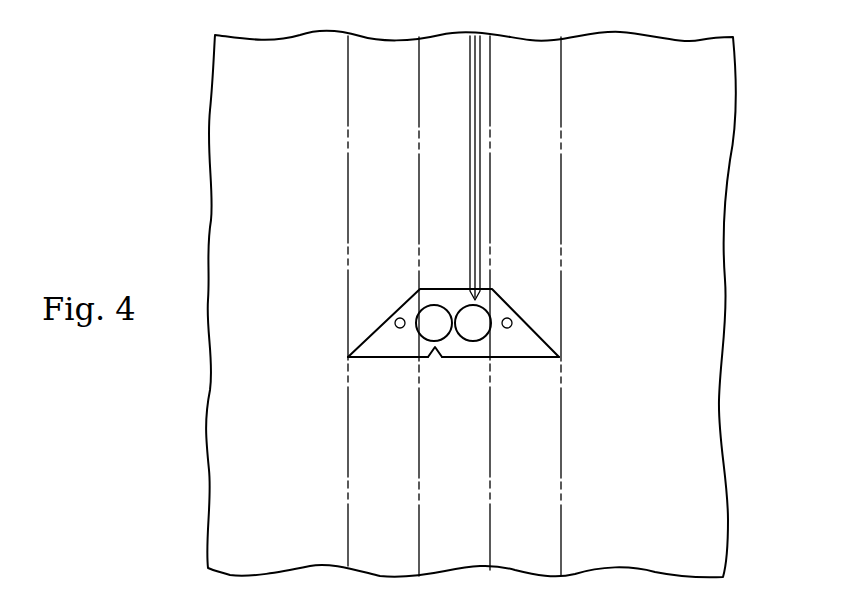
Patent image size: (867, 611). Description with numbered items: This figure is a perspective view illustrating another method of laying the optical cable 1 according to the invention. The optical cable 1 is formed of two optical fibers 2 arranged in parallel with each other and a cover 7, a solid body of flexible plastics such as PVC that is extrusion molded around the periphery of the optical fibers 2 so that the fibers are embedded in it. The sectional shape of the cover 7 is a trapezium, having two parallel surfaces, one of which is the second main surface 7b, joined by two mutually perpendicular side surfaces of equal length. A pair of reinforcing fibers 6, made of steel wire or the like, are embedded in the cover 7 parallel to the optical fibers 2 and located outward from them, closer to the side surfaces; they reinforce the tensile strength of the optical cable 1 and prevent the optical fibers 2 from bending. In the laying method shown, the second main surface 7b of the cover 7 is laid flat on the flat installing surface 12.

The optical cable 1 is at (573, 162).
The optical fibers 2 is at (435, 315).
The reinforcing fibers 6 is at (394, 322).
The cover 7 is at (538, 344).
The second main surface 7b is at (522, 360).
The installing surface 12 is at (648, 493).